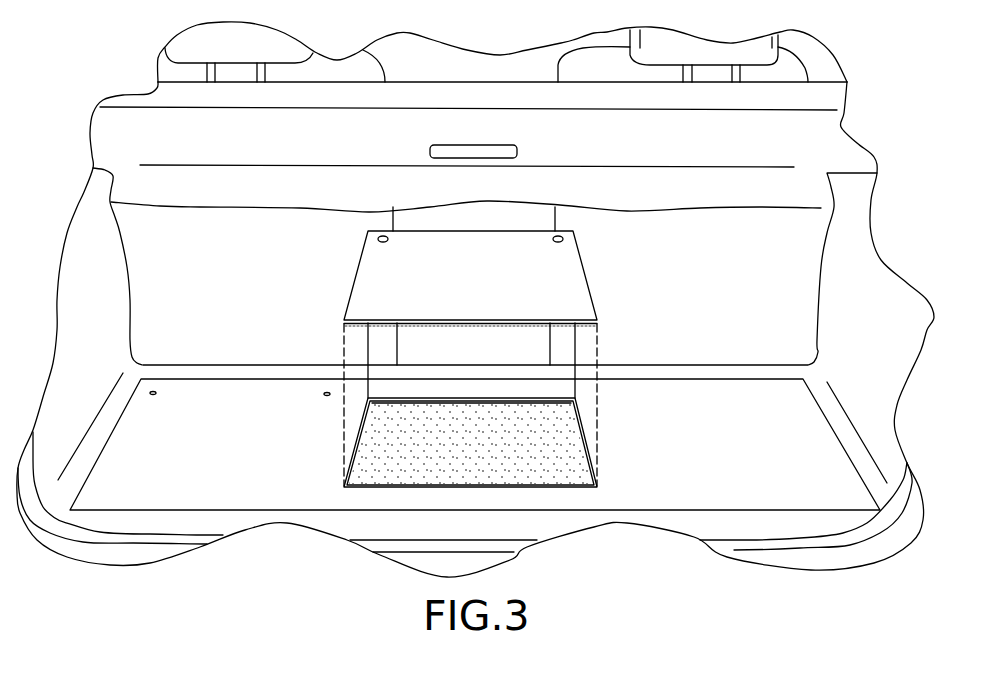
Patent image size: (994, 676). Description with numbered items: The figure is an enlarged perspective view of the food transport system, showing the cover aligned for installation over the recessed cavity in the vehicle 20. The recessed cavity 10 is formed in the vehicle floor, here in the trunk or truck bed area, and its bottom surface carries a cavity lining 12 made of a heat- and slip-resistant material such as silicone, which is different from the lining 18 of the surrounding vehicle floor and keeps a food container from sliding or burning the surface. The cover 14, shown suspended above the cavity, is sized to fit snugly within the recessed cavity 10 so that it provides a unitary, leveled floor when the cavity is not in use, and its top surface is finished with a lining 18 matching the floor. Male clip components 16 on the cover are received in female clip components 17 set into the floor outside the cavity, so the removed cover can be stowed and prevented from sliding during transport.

The recessed cavity 10 is at (577, 438).
The cavity lining 12 is at (566, 474).
The cover 14 is at (472, 322).
The male clip component 16 is at (383, 236).
The female clip component 17 is at (153, 392).
The lining of the vehicle floor 18 is at (543, 290).
The vehicle 20 is at (97, 287).